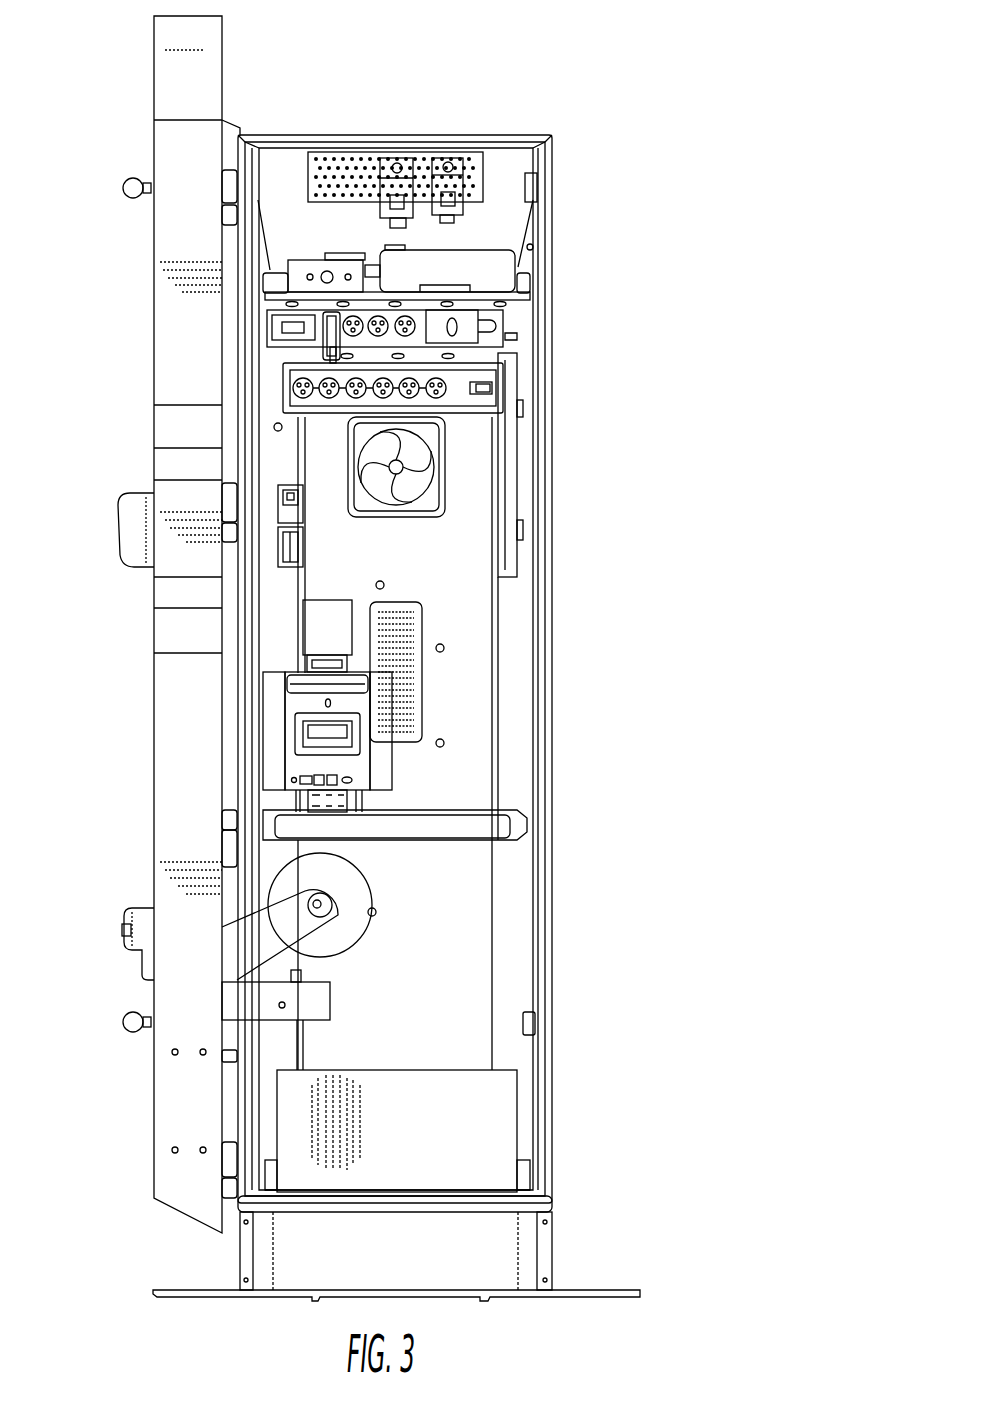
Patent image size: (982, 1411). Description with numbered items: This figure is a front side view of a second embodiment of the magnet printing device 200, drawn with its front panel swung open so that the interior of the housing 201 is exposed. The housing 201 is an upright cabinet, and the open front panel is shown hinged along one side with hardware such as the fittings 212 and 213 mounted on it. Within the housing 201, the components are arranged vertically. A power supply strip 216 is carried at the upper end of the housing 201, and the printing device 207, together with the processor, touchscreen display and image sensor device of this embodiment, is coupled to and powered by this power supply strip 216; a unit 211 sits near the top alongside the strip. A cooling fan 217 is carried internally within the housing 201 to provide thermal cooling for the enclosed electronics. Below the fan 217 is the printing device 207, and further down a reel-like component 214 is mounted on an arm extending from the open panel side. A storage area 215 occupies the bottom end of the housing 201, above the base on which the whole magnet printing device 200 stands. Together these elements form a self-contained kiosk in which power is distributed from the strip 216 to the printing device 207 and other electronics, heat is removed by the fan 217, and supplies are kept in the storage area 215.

The magnet printing device 200 is at (665, 94).
The housing 201 is at (154, 360).
The printing device 207 is at (410, 690).
The power supply unit 211 is at (495, 267).
The door hinge bracket 212 is at (118, 520).
The door latch bracket 213 is at (122, 928).
The cable reel 214 is at (343, 930).
The storage area 215 is at (475, 1132).
The power supply strip 216 is at (482, 380).
The cooling fan 217 is at (383, 487).